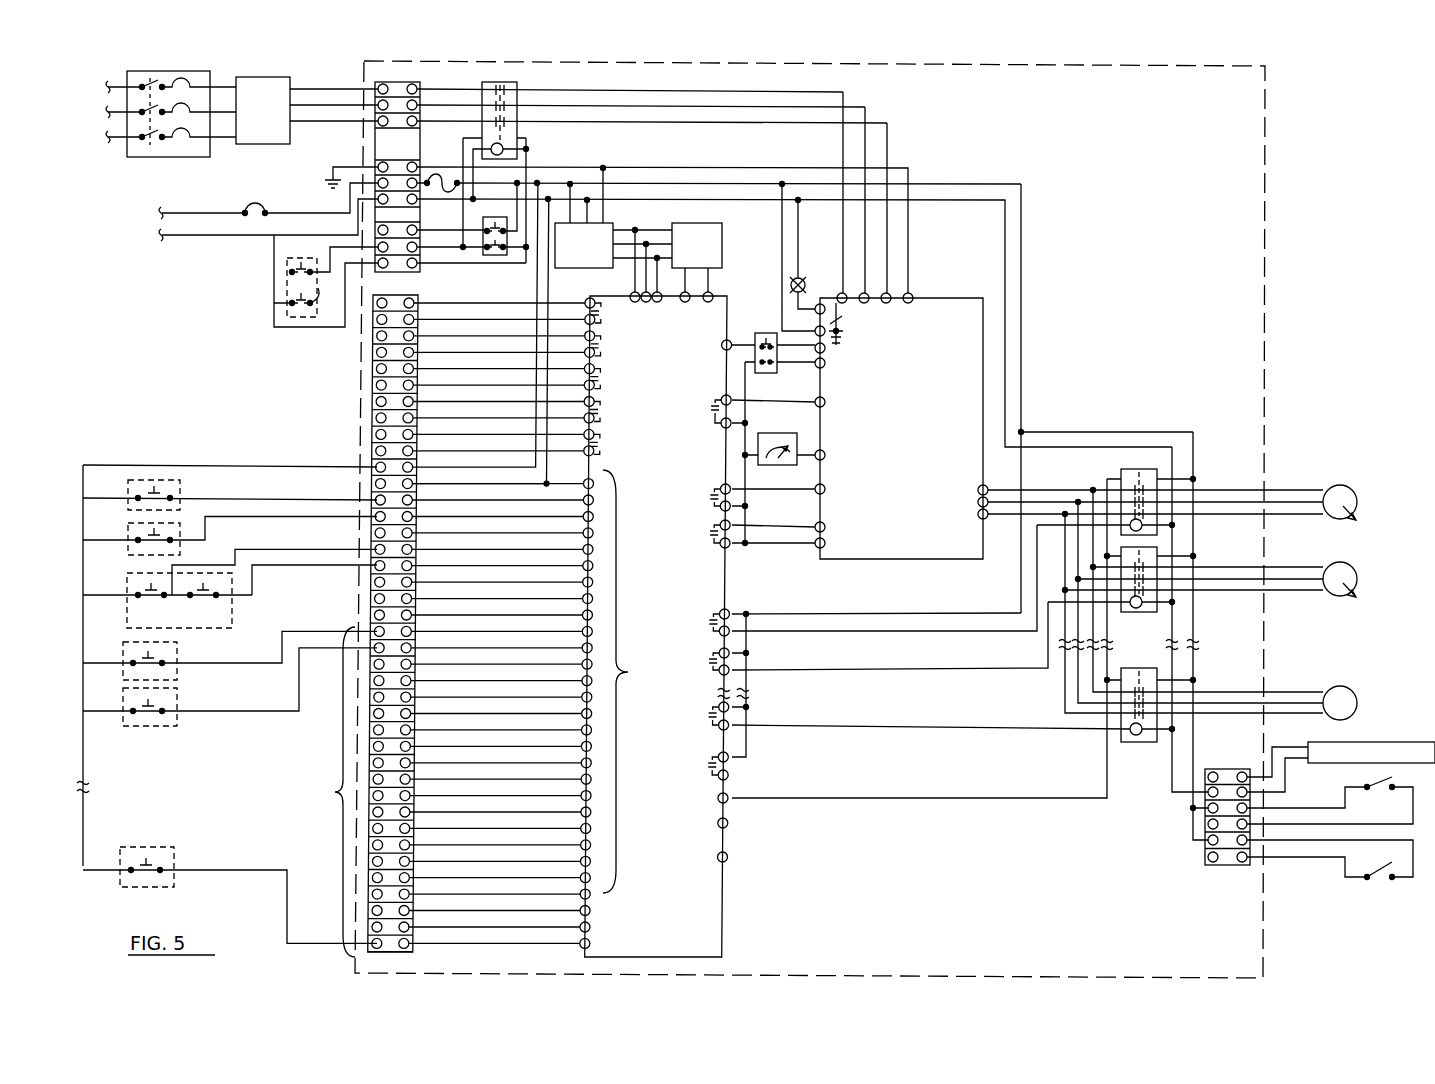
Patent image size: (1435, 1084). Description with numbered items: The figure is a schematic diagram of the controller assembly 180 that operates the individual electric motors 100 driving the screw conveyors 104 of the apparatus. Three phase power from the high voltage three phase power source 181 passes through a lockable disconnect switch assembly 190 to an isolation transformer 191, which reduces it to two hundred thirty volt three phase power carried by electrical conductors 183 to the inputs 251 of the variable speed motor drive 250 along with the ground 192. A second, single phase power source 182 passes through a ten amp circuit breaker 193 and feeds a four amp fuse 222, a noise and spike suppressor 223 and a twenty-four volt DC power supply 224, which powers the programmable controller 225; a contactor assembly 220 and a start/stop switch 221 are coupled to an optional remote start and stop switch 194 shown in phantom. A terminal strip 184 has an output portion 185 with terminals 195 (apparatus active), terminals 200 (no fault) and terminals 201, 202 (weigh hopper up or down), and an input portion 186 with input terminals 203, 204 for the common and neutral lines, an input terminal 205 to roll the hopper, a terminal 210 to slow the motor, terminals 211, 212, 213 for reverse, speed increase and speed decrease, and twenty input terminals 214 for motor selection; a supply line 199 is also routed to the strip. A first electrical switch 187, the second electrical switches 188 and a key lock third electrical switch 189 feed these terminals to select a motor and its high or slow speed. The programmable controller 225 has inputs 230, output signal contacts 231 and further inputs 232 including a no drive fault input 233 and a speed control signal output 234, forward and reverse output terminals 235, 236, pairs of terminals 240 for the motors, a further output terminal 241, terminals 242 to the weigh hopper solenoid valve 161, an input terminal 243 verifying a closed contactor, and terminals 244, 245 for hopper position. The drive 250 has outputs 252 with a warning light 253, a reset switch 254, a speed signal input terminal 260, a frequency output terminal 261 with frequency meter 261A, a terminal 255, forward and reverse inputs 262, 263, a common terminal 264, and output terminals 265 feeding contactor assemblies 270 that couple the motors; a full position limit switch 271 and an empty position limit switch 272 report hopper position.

The electric motor 100 is at (1352, 489).
The screw conveyor 104 is at (1358, 516).
The weigh hopper solenoid valve 161 is at (1352, 745).
The controller assembly 180 is at (1088, 305).
The source of 480 volt AC 60 Hz 3 phase power 181 is at (87, 69).
The source of 120 volt AC 60 Hz power 182 is at (150, 222).
The electrical conductors 183 is at (843, 92).
The terminal strip 184 is at (366, 145).
The output portion 185 is at (301, 372).
The input portion 186 is at (339, 635).
The first electrical switch 187 is at (122, 498).
The second electrical switch 188 is at (180, 670).
The third electrical switch 189 is at (163, 619).
The lockable disconnect switch assembly 190 is at (190, 75).
The isolation transformer 191 is at (249, 121).
The ground 192 is at (325, 171).
The 10 amp circuit breaker 193 is at (258, 212).
The remote start and stop switch 194 is at (281, 287).
The pair of terminals 195 is at (377, 306).
The supply line 199 is at (805, 398).
The pair of adjoining terminals 200 is at (377, 322).
The terminal 201 is at (377, 369).
The terminal 202 is at (377, 417).
The input terminal 203 is at (377, 465).
The input terminal 204 is at (377, 483).
The input terminal 205 is at (377, 500).
The terminal 210 is at (377, 516).
The terminal 211 is at (377, 533).
The terminal 212 is at (377, 549).
The terminal 213 is at (377, 566).
The input terminals 214 is at (327, 792).
The contactor assembly 220 is at (520, 86).
The start/stop switch 221 is at (490, 256).
The 4 amp fuse 222 is at (430, 178).
The noise and spike suppressor 223 is at (600, 227).
The 24 volt DC power supply 224 is at (705, 227).
The programmable controller 225 is at (678, 626).
The inputs 230 is at (634, 681).
The output signal contacts 231 is at (604, 372).
The inputs 232 is at (617, 480).
The no drive fault input 233 is at (731, 341).
The 4-20 ma speed control signal output 234 is at (722, 423).
The pair of output terminals 235 is at (722, 506).
The pair of electrical output terminals 236 is at (722, 543).
The pairs of terminals 240 is at (722, 631).
The output terminal 241 is at (722, 653).
The pair of terminals 242 is at (722, 775).
The input terminal 243 is at (722, 798).
The terminal 244 is at (722, 823).
The terminal 245 is at (722, 857).
The variable speed motor drive 250 is at (962, 294).
The inputs 251 is at (845, 302).
The outputs 252 is at (888, 302).
The warning light 253 is at (806, 279).
The reset switch 254 is at (771, 374).
The terminal 255 is at (824, 364).
The speed signal input terminal 260 is at (823, 404).
The frequency output terminal 261 is at (818, 458).
The frequency meter 261A is at (773, 433).
The forward drive signal input 262 is at (825, 489).
The motor reverse signal input 263 is at (825, 527).
The common terminal 264 is at (825, 543).
The output terminals 265 is at (985, 514).
The contactor assemblies 270 is at (1137, 466).
The weigh hopper full position limit switch 271 is at (1390, 790).
The weigh hopper empty position limit switch 272 is at (1385, 878).